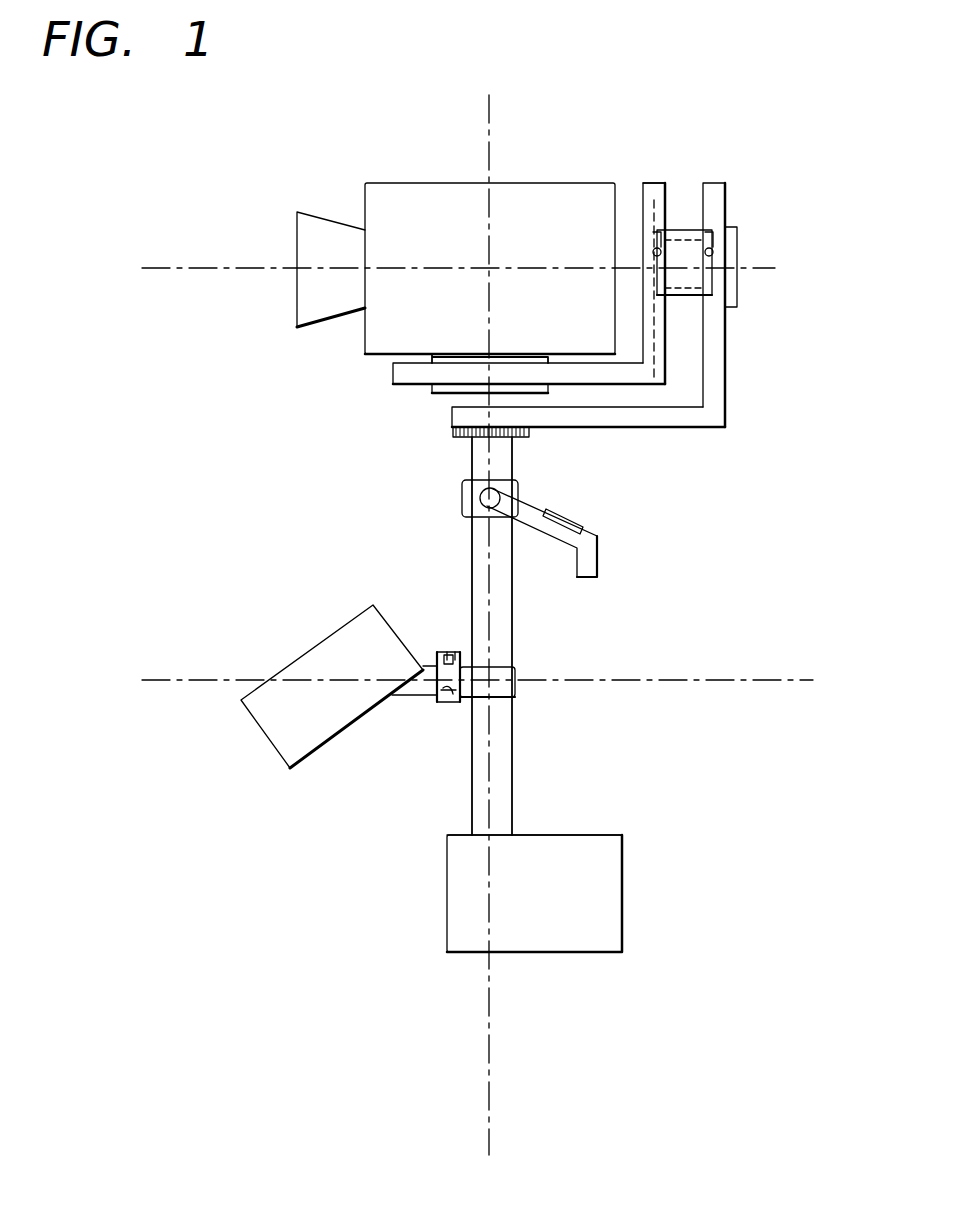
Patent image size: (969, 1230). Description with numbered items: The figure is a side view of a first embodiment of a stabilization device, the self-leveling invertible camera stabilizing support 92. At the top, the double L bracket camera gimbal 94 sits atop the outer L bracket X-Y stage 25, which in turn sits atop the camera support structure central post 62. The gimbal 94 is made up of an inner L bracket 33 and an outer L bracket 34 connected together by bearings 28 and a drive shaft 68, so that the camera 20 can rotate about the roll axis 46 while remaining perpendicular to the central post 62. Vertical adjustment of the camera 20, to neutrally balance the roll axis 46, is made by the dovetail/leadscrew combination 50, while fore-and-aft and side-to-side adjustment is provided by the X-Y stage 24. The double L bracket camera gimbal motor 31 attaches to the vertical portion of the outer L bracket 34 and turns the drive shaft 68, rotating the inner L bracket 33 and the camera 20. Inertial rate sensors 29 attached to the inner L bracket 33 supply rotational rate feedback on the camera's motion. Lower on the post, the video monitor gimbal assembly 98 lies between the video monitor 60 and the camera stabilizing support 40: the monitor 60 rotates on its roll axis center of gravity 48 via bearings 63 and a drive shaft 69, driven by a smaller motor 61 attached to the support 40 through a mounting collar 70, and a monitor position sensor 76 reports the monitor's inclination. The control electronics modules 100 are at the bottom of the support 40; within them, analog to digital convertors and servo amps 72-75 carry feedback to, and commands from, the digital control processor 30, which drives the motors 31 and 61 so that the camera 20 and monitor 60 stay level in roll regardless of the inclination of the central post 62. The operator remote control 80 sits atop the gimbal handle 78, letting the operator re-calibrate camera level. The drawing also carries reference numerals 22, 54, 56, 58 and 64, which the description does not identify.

The camera 20 is at (425, 211).
The camera lens 22 is at (332, 231).
The X-Y stage 24 is at (397, 370).
The outer L bracket X-Y stage 25 is at (450, 433).
The bearings 28 is at (709, 246).
The inertial rate sensors 29 is at (432, 388).
The digital control processor 30 is at (463, 893).
The double L bracket camera gimbal motor 31 is at (716, 280).
The inner L bracket 33 is at (652, 184).
The outer L bracket 34 is at (712, 194).
The camera stabilizing support 40 is at (370, 554).
The roll axis 46 is at (178, 266).
The roll axis center of gravity 48 is at (645, 679).
The dovetail/leadscrew combination 50 is at (650, 200).
The camera base plate 54 is at (525, 352).
The vertical column axis 56 is at (497, 142).
The base top 58 is at (463, 855).
The video monitor 60 is at (290, 742).
The smaller motor 61 is at (448, 651).
The camera support structure central post 62 is at (503, 792).
The bearings 63 is at (437, 660).
The pivot collar 64 is at (457, 498).
The drive shaft 68 is at (697, 264).
The drive shaft 69 is at (443, 704).
The mounting collar 70 is at (518, 668).
The analog to digital convertors and servo amps 72-75 is at (463, 930).
The monitor position sensor 76 is at (456, 651).
The gimbal handle 78 is at (590, 560).
The operator remote control 80 is at (578, 511).
The self-leveling invertible camera stabilizing support 92 is at (750, 587).
The double L bracket camera gimbal 94 is at (784, 342).
The video monitor gimbal assembly 98 is at (444, 760).
The control electronics modules 100 is at (697, 893).